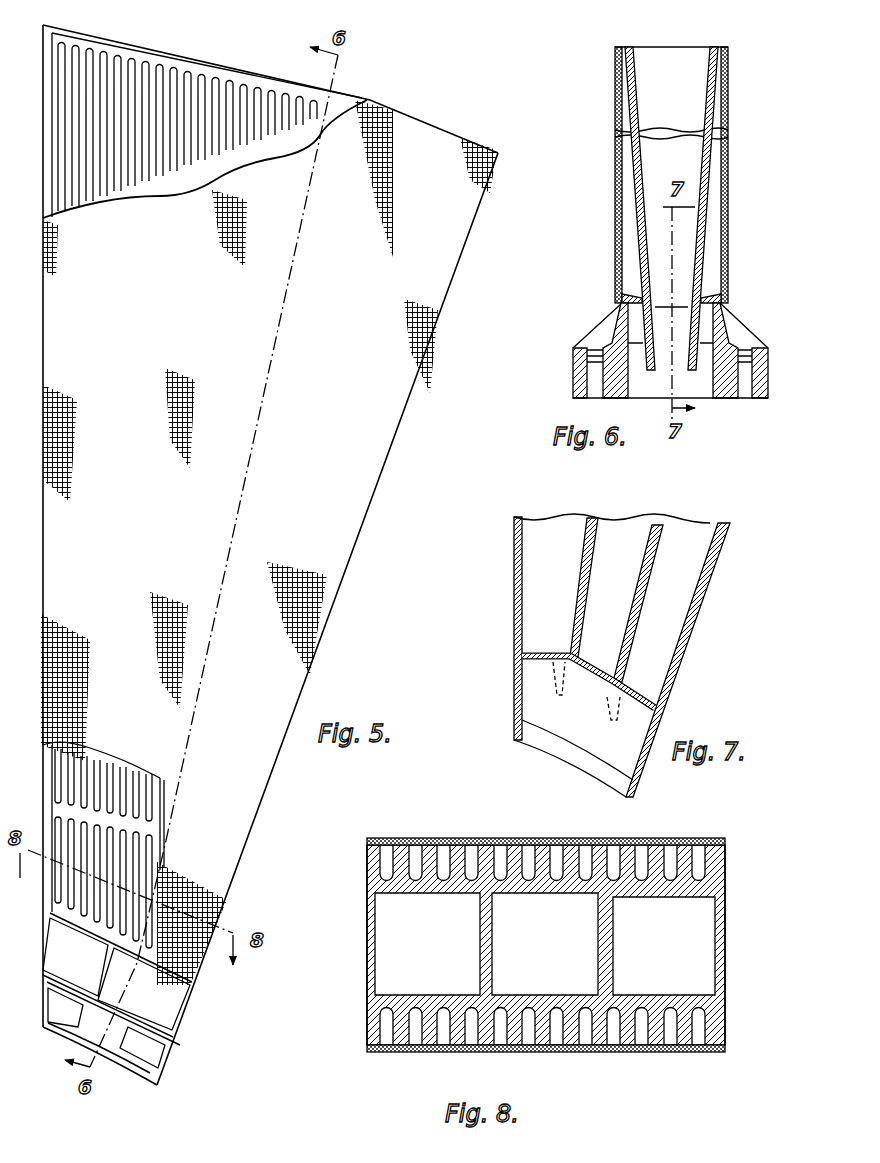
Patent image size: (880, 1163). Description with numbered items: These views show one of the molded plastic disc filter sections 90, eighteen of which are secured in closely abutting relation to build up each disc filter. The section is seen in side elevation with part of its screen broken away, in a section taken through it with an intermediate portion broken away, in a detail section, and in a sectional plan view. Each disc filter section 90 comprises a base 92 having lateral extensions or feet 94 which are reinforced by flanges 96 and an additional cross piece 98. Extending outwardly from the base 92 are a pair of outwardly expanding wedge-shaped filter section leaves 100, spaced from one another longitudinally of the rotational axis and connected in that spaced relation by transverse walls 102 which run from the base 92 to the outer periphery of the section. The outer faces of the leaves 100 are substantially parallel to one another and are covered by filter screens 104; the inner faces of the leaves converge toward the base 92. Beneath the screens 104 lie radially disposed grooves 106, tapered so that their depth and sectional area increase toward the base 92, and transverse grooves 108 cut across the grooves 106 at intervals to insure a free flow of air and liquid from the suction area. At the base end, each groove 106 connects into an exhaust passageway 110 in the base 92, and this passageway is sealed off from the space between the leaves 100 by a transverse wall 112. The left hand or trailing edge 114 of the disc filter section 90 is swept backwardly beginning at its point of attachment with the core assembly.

In FIG. 5, the disc filter section 90 is at (440, 342).
In FIG. 5, the base 92 is at (167, 1065).
In FIG. 6, the base 92 is at (730, 400).
In FIG. 6, the lateral extensions or feet 94 is at (576, 380).
In FIG. 5, the flanges 96 is at (104, 973).
In FIG. 6, the flanges 96 is at (600, 330).
In FIG. 5, the cross piece 98 is at (67, 990).
In FIG. 5, the filter section leaves 100 is at (376, 508).
In FIG. 7, the filter section leaves 100 is at (514, 636).
In FIG. 8, the filter section leaves 100 is at (367, 872).
In FIG. 7, the transverse walls 102 is at (652, 548).
In FIG. 8, the transverse walls 102 is at (480, 958).
In FIG. 5, the filter screens 104 is at (303, 636).
In FIG. 8, the filter screens 104 is at (545, 838).
In FIG. 5, the grooves 106 is at (245, 60).
In FIG. 6, the grooves 106 is at (730, 272).
In FIG. 8, the grooves 106 is at (445, 845).
In FIG. 5, the transverse grooves 108 is at (60, 810).
In FIG. 6, the transverse grooves 108 is at (628, 176).
In FIG. 6, the exhaust passageway 110 is at (665, 363).
In FIG. 6, the transverse wall 112 is at (699, 262).
In FIG. 7, the transverse wall 112 is at (596, 664).
In FIG. 5, the trailing edge 114 is at (43, 346).